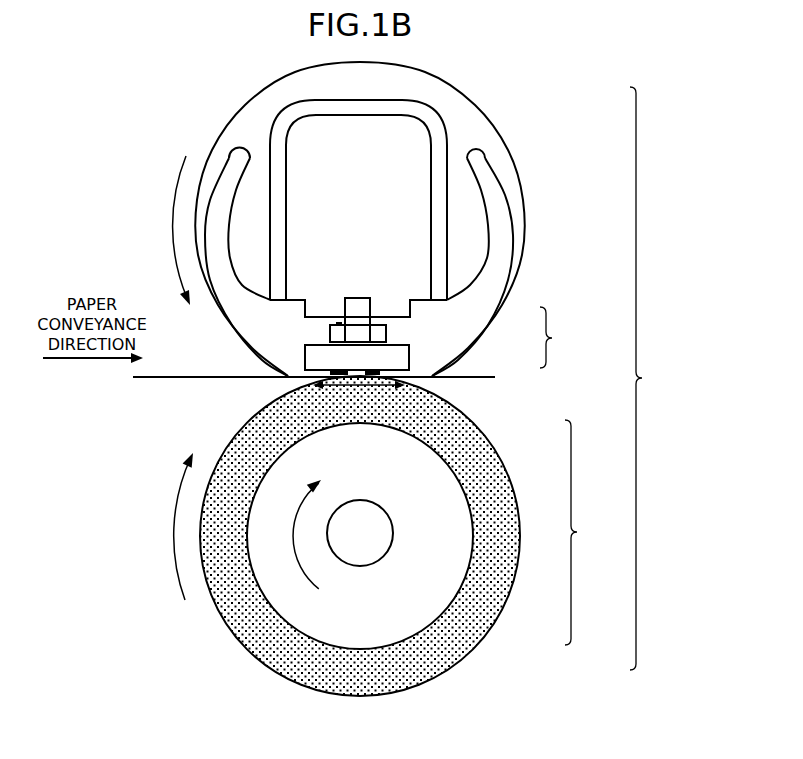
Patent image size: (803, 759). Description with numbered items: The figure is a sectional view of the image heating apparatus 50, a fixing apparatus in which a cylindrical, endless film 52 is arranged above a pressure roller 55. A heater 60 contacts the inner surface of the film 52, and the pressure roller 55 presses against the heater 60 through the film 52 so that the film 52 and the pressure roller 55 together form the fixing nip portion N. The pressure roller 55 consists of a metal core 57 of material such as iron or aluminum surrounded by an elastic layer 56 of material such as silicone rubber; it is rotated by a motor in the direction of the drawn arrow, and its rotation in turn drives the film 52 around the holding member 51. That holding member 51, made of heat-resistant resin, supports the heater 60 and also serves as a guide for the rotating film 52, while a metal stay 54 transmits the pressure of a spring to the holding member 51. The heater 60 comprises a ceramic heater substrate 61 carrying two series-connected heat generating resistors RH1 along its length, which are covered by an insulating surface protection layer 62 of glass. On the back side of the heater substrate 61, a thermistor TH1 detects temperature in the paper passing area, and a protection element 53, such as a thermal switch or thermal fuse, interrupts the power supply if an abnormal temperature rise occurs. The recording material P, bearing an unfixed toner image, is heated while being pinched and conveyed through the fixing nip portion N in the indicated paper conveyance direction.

The image heating apparatus 50 is at (651, 378).
The holding member 51 is at (514, 283).
The cylindrical film 52 is at (254, 106).
The protection element 53 is at (360, 298).
The metal stay 54 is at (424, 113).
The pressure roller 55 is at (585, 532).
The elastic layer 56 is at (500, 463).
The metal core 57 is at (393, 533).
The heater 60 is at (560, 337).
The heater substrate 61 is at (409, 355).
The insulating surface protection layer 62 is at (412, 372).
The thermistor TH1 is at (338, 324).
The heat generating resistors RH1 is at (378, 368).
The recording material P is at (213, 378).
The fixing nip portion N is at (359, 397).